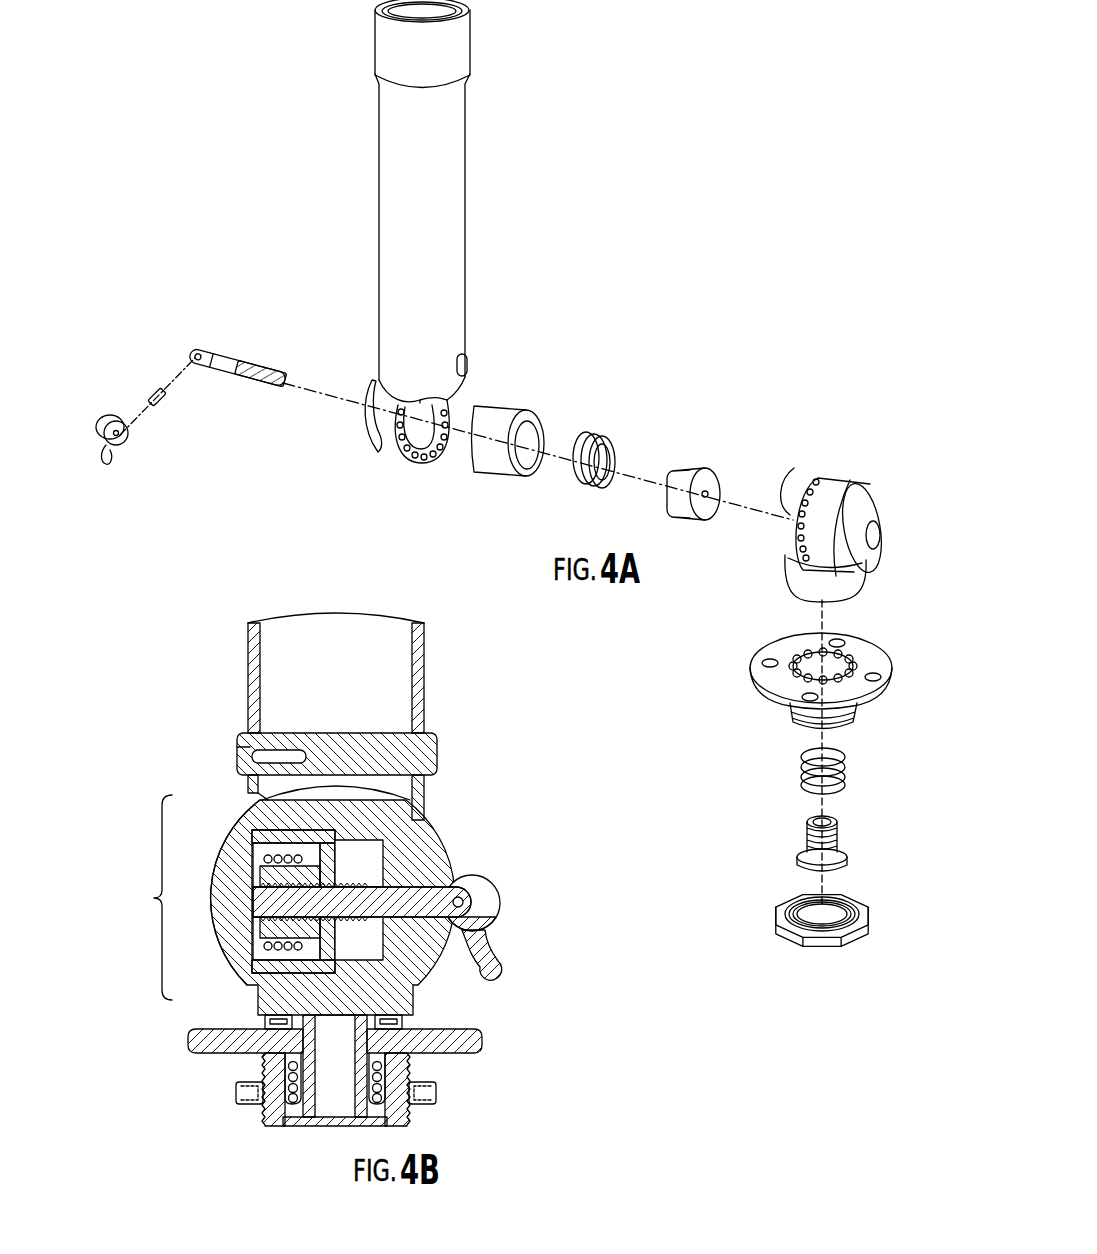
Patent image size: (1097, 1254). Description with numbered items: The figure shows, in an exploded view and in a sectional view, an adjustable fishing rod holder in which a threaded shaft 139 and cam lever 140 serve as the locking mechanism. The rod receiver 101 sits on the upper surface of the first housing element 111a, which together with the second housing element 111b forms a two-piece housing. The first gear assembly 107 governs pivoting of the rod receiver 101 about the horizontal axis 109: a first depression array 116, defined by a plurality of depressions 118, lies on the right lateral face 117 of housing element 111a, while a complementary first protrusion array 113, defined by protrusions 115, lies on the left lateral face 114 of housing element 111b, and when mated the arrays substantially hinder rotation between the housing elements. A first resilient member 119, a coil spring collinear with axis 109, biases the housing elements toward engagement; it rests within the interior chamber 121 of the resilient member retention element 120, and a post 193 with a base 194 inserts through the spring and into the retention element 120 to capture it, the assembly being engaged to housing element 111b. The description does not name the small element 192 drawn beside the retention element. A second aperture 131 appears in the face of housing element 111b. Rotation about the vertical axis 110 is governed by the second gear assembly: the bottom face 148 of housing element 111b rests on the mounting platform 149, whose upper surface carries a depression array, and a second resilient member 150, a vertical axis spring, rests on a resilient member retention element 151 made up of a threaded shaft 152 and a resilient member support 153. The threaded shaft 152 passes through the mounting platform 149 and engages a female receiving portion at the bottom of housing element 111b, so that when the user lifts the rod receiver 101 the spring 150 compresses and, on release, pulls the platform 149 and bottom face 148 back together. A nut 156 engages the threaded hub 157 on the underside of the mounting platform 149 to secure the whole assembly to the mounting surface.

In FIG. 4A, the rod receiver 101 is at (465, 165).
In FIG. 4B, the rod receiver 101 is at (425, 690).
In FIG. 4B, the first gear assembly 107 is at (155, 898).
In FIG. 4A, the horizontal axis 109 is at (650, 468).
In FIG. 4A, the vertical axis 110 is at (825, 605).
In FIG. 4A, the first housing element 111a is at (366, 418).
In FIG. 4B, the first housing element 111a is at (418, 840).
In FIG. 4A, the second housing element 111b is at (872, 512).
In FIG. 4B, the second housing element 111b is at (223, 845).
In FIG. 4A, the first protrusion array 113 is at (818, 478).
In FIG. 4A, the left lateral surface or face 114 is at (797, 538).
In FIG. 4A, the protrusions 115 is at (787, 472).
In FIG. 4A, the first depression array 116 is at (430, 458).
In FIG. 4A, the right lateral surface or face 117 is at (443, 399).
In FIG. 4A, the depressions 118 is at (396, 435).
In FIG. 4A, the first resilient member 119 is at (606, 452).
In FIG. 4B, the first resilient member 119 is at (270, 947).
In FIG. 4A, the resilient member retention element 120 is at (490, 474).
In FIG. 4B, the resilient member retention element 120 is at (312, 835).
In FIG. 4A, the interior chamber 121 is at (528, 458).
In FIG. 4A, the second aperture 131 is at (881, 540).
In FIG. 4A, the threaded shaft 139 is at (232, 355).
In FIG. 4B, the threaded shaft 139 is at (423, 891).
In FIG. 4A, the cam lever 140 is at (98, 442).
In FIG. 4B, the cam lever 140 is at (500, 918).
In FIG. 4A, the bottom surface or face 148 is at (792, 590).
In FIG. 4A, the mounting platform 149 is at (880, 680).
In FIG. 4B, the mounting platform 149 is at (472, 1030).
In FIG. 4A, the second resilient member 150 is at (848, 775).
In FIG. 4B, the second resilient member 150 is at (402, 1068).
In FIG. 4A, the resilient member retention element 151 is at (840, 850).
In FIG. 4B, the resilient member retention element 151 is at (288, 1058).
In FIG. 4A, the threaded shaft 152 is at (805, 840).
In FIG. 4A, the resilient member support 153 is at (800, 862).
In FIG. 4B, the resilient member support 153 is at (298, 1116).
In FIG. 4A, the nut 156 is at (870, 922).
In FIG. 4B, the nut 156 is at (434, 1094).
In FIG. 4A, the threaded hub 157 is at (790, 720).
In FIG. 4A, the pin 192 is at (470, 365).
In FIG. 4B, the pin 192 is at (250, 742).
In FIG. 4A, the post 193 is at (680, 500).
In FIG. 4B, the post 193 is at (283, 930).
In FIG. 4A, the base 194 is at (708, 466).
In FIG. 4B, the base 194 is at (253, 853).